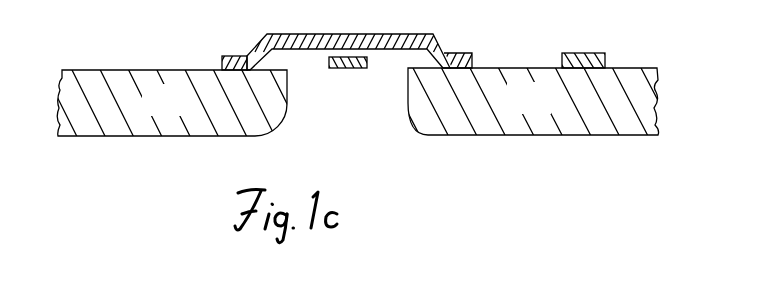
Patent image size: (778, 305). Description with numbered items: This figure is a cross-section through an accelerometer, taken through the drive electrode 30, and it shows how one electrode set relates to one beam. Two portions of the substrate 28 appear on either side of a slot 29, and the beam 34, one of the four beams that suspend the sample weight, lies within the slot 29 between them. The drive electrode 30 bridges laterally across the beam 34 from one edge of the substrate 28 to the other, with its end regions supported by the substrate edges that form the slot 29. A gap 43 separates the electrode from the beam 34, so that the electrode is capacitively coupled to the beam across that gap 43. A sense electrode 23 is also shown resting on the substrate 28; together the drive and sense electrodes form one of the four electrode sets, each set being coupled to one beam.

The substrate 28 is at (179, 110).
The drive electrode 30 is at (387, 34).
The sense electrode 23 is at (583, 53).
The beam 34 is at (352, 68).
The gap 43 is at (326, 52).
The slot 29 is at (343, 113).